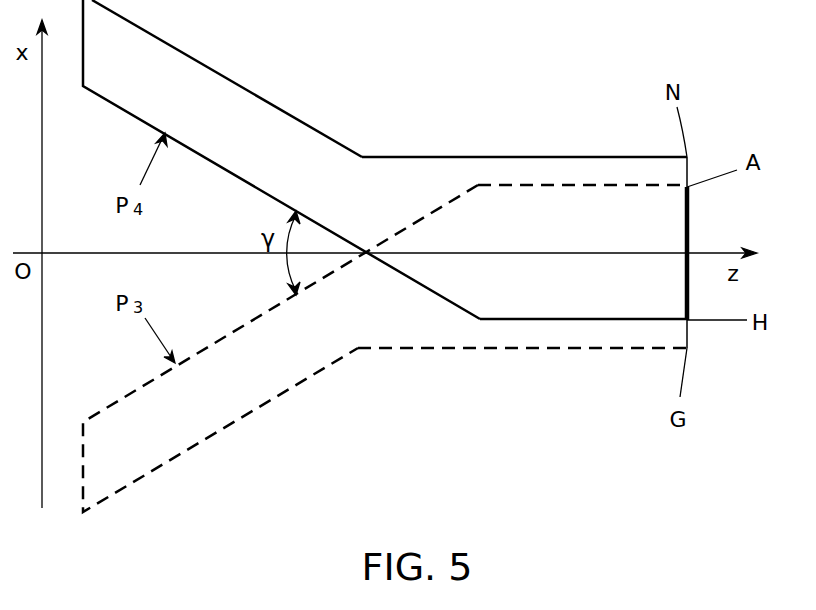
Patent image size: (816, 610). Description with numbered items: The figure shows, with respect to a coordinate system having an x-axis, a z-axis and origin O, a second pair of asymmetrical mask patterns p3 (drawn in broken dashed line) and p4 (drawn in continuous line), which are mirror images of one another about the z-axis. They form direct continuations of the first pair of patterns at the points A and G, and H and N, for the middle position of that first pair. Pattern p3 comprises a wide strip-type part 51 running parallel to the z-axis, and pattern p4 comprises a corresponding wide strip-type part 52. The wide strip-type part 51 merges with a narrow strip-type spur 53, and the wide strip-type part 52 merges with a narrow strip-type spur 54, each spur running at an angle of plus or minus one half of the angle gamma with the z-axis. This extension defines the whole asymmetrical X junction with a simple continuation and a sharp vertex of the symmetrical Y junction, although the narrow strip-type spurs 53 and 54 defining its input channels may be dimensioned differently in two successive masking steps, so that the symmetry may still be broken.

The wide strip-type part 51 is at (522, 165).
The wide strip-type part 52 is at (530, 337).
The narrow strip-type spur 53 is at (235, 105).
The narrow strip-type spur 54 is at (255, 385).